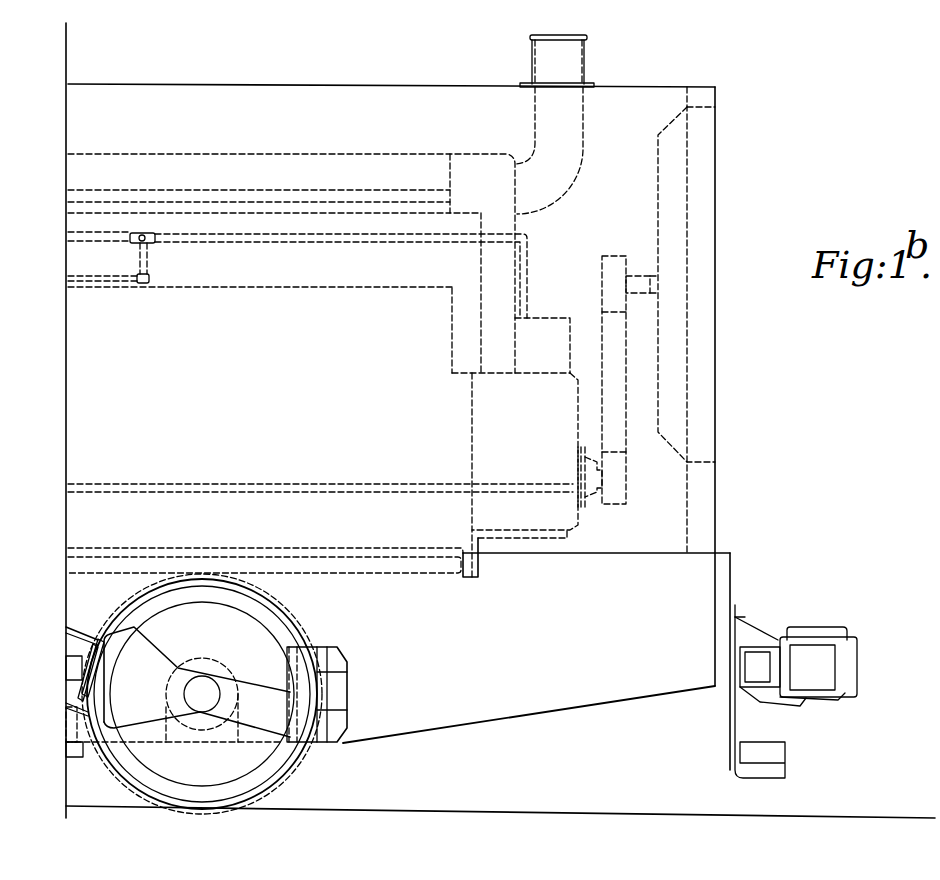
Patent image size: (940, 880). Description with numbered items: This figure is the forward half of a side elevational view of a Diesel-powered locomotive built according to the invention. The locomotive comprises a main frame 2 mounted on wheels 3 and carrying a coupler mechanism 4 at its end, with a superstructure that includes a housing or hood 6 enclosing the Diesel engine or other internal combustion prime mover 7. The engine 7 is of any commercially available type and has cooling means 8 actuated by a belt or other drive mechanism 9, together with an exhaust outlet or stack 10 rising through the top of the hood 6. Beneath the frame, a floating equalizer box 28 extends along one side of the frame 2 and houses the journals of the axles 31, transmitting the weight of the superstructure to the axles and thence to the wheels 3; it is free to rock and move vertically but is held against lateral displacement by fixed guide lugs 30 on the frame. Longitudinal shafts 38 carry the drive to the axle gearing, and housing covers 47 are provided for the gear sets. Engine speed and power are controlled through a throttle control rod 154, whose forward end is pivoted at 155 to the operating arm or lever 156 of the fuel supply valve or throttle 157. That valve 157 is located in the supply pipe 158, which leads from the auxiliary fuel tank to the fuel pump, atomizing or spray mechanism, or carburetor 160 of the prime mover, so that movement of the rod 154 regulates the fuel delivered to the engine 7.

The main frame 2 is at (530, 708).
The wheels 3 is at (290, 758).
The coupler mechanism 4 is at (805, 632).
The housing or hood 6 is at (250, 86).
The Diesel engine 7 is at (323, 365).
The cooling means 8 is at (666, 200).
The drive mechanism 9 is at (622, 381).
The exhaust outlet or stack 10 is at (575, 59).
The equalizer box 28 is at (202, 694).
The fixed guide lugs 30 is at (332, 692).
The axles 31 is at (219, 718).
The longitudinal shafts 38 is at (72, 671).
The housing covers 47 is at (197, 682).
The throttle control rod 154 is at (99, 290).
The pivot 155 is at (146, 285).
The operating arm or lever 156 is at (150, 278).
The fuel supply valve or throttle 157 is at (150, 234).
The supply pipe 158 is at (307, 240).
The fuel pump, atomizing or spray mechanism, or carburetor 160 is at (556, 318).